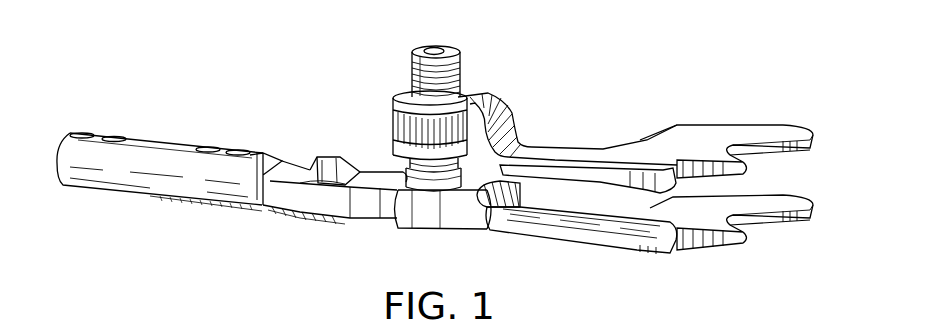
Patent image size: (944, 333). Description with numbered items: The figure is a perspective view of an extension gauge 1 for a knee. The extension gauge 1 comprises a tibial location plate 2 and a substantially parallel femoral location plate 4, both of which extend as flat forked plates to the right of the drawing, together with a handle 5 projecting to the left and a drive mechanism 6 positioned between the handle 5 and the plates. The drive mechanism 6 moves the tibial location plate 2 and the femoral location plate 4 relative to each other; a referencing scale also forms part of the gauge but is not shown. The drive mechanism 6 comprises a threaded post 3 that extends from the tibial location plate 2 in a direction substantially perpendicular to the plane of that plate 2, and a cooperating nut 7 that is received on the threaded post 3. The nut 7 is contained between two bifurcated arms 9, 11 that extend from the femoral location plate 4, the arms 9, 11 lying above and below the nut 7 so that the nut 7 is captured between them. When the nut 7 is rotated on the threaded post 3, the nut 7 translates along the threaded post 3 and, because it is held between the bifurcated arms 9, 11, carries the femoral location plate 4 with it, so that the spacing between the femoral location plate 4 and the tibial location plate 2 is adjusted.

The extension gauge 1 is at (668, 62).
The tibial location plate 2 is at (707, 259).
The threaded post 3 is at (446, 51).
The femoral location plate 4 is at (738, 116).
The handle 5 is at (168, 210).
The drive mechanism 6 is at (404, 122).
The nut 7 is at (392, 124).
The bifurcated arm 9 is at (405, 98).
The bifurcated arm 11 is at (395, 151).